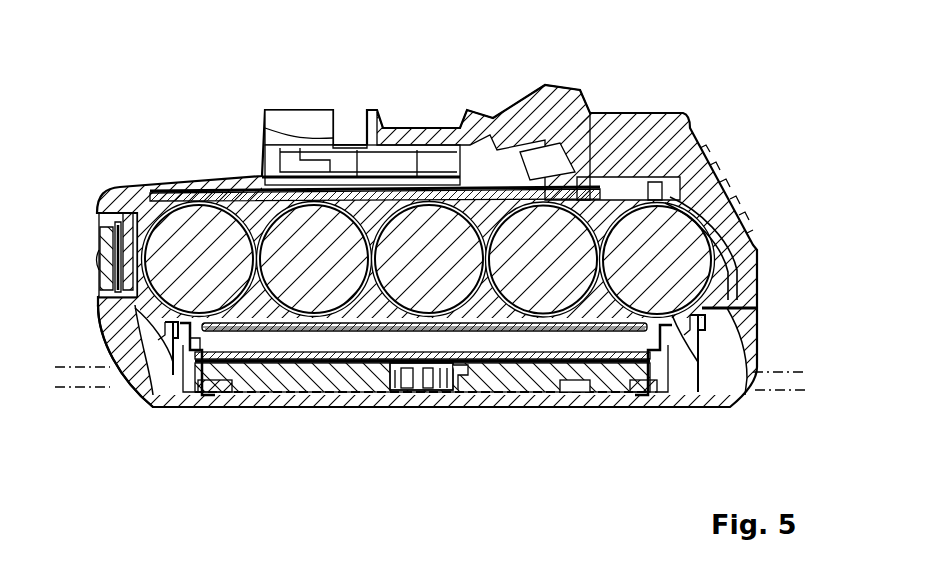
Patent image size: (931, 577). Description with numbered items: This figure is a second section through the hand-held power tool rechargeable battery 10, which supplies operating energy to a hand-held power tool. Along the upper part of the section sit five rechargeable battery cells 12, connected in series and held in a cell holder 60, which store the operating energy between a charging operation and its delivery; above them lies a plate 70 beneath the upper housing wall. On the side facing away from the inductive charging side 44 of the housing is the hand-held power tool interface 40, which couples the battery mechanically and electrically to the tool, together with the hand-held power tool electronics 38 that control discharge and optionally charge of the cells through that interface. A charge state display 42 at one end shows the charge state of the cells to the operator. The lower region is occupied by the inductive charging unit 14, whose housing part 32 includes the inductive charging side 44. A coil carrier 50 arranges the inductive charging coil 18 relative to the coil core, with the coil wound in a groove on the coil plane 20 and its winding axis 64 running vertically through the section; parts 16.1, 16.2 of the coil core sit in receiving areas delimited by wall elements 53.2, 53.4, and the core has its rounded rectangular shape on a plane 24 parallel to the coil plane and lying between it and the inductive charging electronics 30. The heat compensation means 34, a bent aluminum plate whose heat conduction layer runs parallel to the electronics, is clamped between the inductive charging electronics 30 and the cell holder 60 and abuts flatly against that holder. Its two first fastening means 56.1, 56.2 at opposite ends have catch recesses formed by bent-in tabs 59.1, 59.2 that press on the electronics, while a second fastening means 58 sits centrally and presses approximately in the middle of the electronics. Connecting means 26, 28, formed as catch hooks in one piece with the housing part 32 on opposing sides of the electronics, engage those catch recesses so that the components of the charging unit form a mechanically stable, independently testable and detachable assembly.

The hand-held power tool rechargeable battery 10 is at (730, 106).
The rechargeable battery cells 12 is at (673, 233).
The inductive charging unit 14 is at (128, 410).
The part of coil core 16.1 is at (276, 392).
The part of coil core 16.2 is at (581, 392).
The inductive charging coil 18 is at (641, 392).
The coil plane 20 is at (793, 391).
The plane 24 is at (793, 372).
The connecting means 26 is at (175, 374).
The connecting means 28 is at (683, 340).
The inductive charging electronics 30 is at (351, 332).
The housing part 32 is at (245, 393).
The heat compensation means 34 is at (305, 332).
The hand-held power tool electronics 38 is at (419, 176).
The hand-held power tool interface 40 is at (352, 100).
The charge state display 42 is at (94, 273).
The inductive charging side 44 is at (471, 392).
The coil carrier 50 is at (621, 394).
The wall element 53.2 is at (513, 392).
The wall element 53.4 is at (341, 360).
The first fastening means 56.1 is at (170, 321).
The first fastening means 56.2 is at (705, 312).
The second fastening means 58 is at (401, 364).
The tab 59.1 is at (196, 396).
The tab 59.2 is at (671, 396).
The cell holder 60 is at (715, 292).
The winding axis 64 is at (435, 390).
The top plate 70 is at (220, 188).